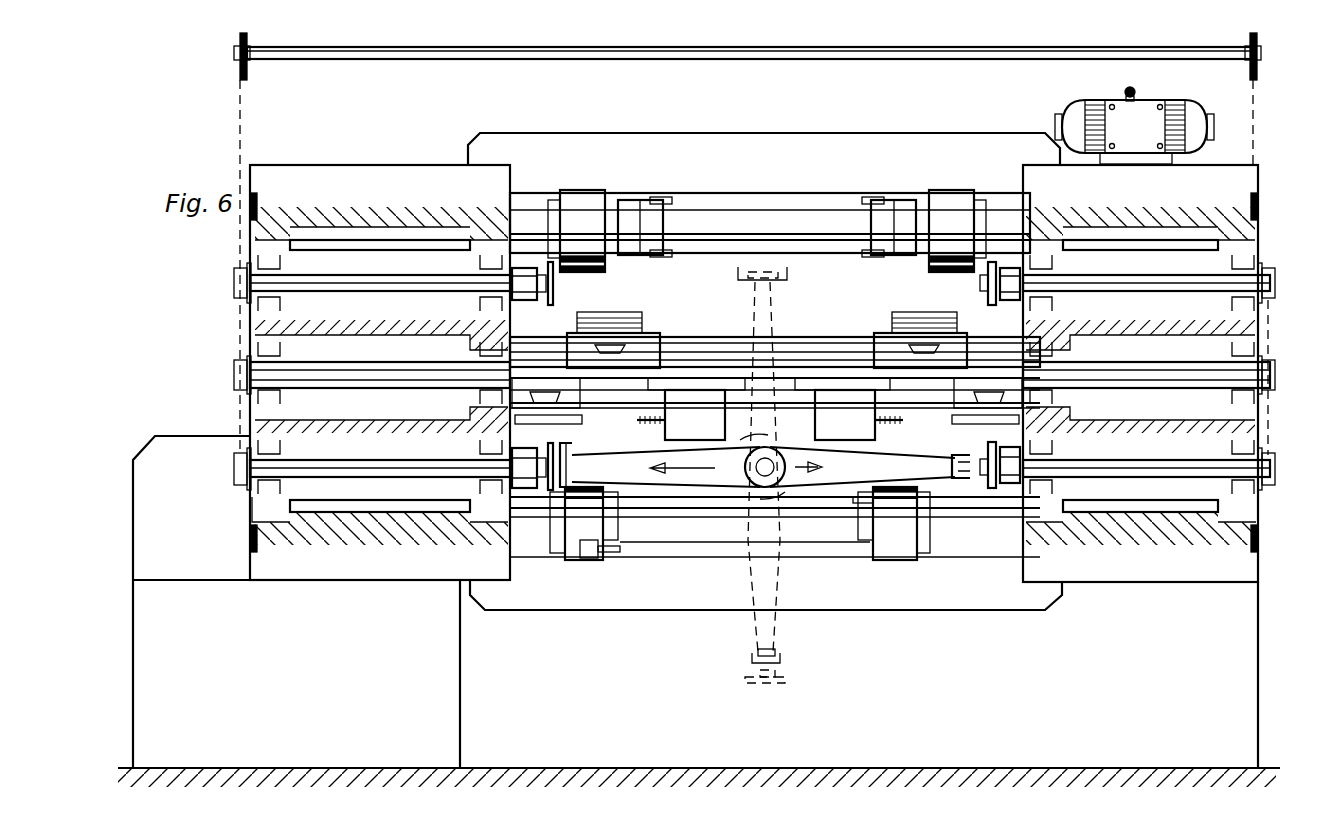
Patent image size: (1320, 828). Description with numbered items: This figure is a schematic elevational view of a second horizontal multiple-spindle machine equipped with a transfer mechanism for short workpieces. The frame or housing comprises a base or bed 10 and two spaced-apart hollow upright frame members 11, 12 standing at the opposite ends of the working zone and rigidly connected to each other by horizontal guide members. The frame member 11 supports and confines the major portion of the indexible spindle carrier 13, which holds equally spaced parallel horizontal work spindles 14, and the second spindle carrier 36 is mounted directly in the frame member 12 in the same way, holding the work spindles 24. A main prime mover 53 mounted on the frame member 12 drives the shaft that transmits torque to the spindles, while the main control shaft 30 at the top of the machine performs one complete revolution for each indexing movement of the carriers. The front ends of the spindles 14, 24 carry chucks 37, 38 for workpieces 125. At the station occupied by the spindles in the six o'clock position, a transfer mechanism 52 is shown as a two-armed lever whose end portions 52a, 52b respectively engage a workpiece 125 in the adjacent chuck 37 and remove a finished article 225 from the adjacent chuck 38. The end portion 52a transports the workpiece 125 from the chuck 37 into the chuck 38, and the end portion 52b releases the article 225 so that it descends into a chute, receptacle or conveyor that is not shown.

The base or bed 10 is at (1238, 658).
The upright frame member 11 is at (372, 177).
The upright frame member 12 is at (1237, 178).
The spindle carrier 13 is at (258, 313).
The work spindles 14 is at (378, 283).
The work spindles 24 is at (1113, 283).
The main control shaft 30 is at (703, 58).
The second spindle carrier 36 is at (1247, 313).
The chuck 37 is at (529, 292).
The chuck 38 is at (1006, 292).
The transfer mechanism 52 is at (715, 478).
The end portion of transfer lever 52a is at (576, 452).
The end portion of transfer lever 52b is at (958, 455).
The main prime mover 53 is at (1146, 110).
The workpiece 125 is at (554, 296).
The finished article 225 is at (790, 680).